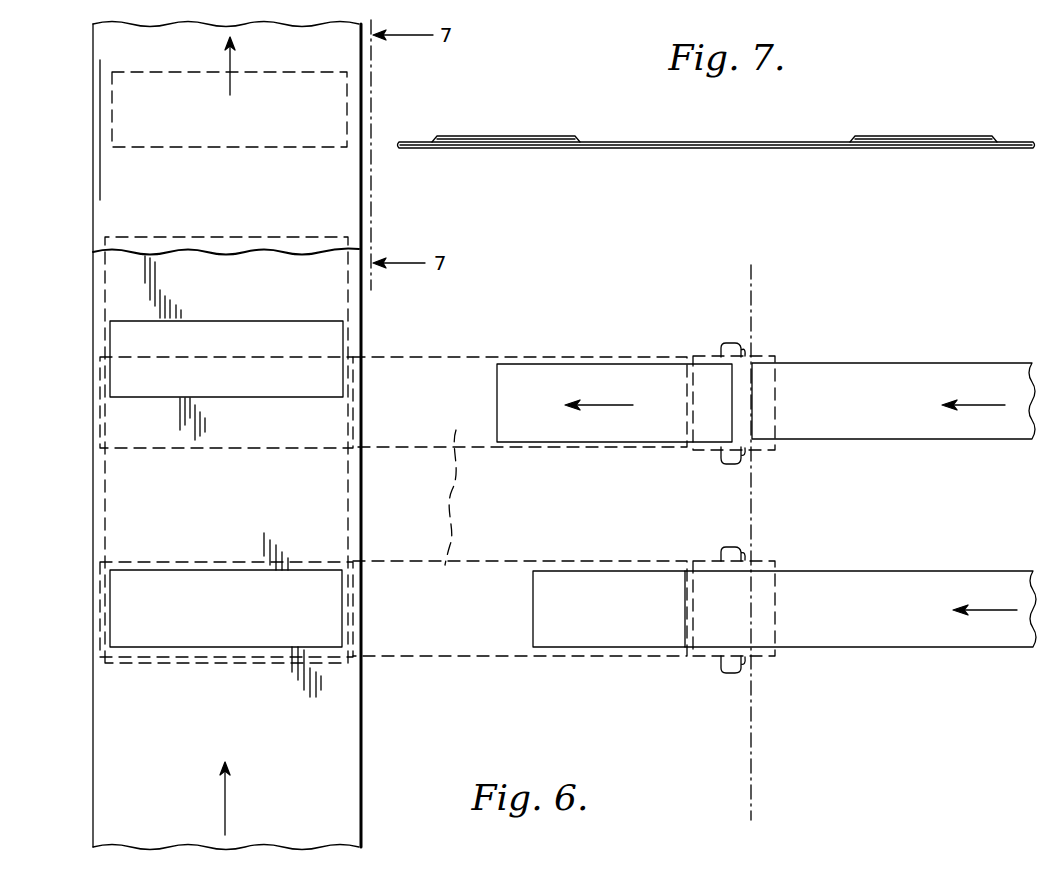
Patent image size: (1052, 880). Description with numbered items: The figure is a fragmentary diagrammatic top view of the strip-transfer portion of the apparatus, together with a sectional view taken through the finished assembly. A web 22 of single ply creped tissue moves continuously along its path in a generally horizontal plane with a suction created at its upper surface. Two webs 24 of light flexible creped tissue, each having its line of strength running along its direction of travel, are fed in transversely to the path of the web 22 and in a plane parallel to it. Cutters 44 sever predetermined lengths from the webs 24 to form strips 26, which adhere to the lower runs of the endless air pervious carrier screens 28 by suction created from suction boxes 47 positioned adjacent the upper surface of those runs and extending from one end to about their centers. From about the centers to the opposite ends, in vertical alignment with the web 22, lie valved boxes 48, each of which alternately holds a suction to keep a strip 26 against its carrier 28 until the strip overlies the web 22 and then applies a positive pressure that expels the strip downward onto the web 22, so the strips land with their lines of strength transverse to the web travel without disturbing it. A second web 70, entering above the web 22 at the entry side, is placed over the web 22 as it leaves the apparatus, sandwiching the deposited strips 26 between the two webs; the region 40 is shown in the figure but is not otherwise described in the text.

In FIG. 6, the web 22 is at (363, 317).
In FIG. 7, the web 22 is at (757, 148).
In FIG. 6, the web of light flexible sheet material 24 is at (908, 368).
In FIG. 6, the strips 26 is at (142, 70).
In FIG. 7, the strips 26 is at (548, 140).
In FIG. 6, the air pervious carrier screen 28 is at (468, 357).
In FIG. 6, the application zone 40 is at (105, 282).
In FIG. 6, the cutters 44 is at (705, 356).
In FIG. 6, the suction boxes 47 is at (431, 497).
In FIG. 6, the valved boxes 48 is at (100, 427).
In FIG. 6, the web 70 is at (120, 172).
In FIG. 7, the web 70 is at (651, 120).